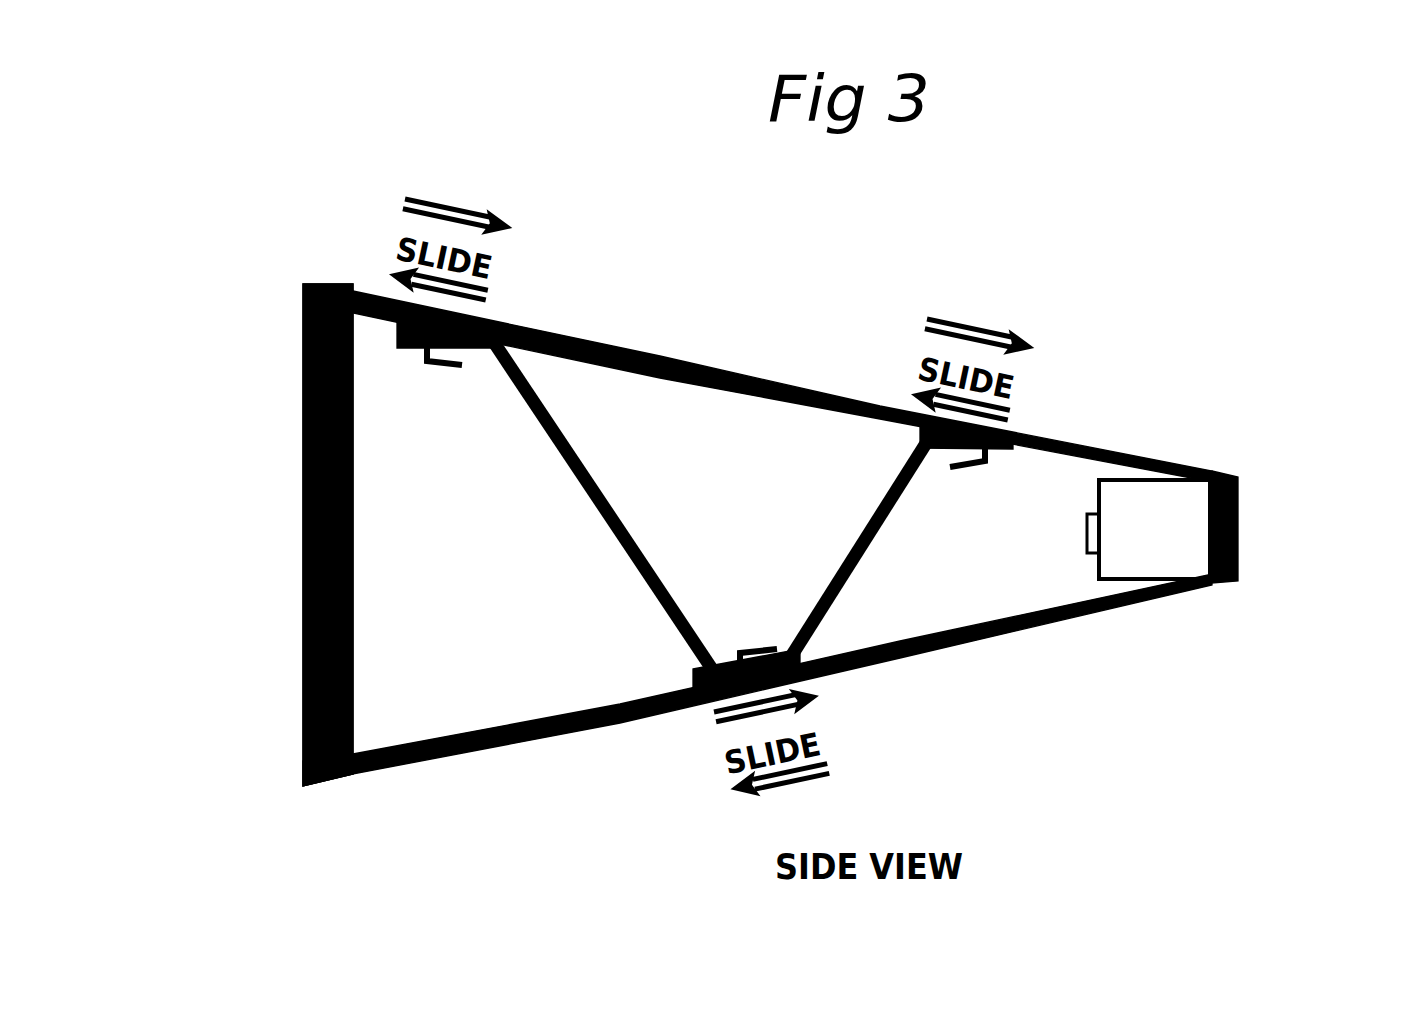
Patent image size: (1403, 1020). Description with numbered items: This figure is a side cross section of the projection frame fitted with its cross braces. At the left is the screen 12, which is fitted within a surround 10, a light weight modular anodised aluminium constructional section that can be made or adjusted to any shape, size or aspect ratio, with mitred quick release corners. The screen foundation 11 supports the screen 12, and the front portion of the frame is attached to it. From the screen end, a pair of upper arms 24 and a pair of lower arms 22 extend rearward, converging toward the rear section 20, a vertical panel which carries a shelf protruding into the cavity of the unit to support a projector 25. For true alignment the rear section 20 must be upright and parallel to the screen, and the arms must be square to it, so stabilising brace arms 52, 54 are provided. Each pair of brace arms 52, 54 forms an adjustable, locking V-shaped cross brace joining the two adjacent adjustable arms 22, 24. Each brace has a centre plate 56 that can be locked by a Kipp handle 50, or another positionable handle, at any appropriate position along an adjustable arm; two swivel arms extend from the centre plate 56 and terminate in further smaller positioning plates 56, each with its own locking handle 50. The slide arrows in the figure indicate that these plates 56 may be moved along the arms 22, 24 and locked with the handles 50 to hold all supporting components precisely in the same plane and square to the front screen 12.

The surround 10 is at (303, 697).
The screen foundation 11 is at (345, 778).
The screen 12 is at (292, 556).
The rear section 20 is at (1250, 517).
The lower arms 22 is at (435, 752).
The upper arms 24 is at (715, 366).
The projector 25 is at (1096, 500).
The Kipp handle 50 is at (715, 660).
The stabilising brace arm 52 is at (885, 535).
The stabilising brace arm 54 is at (640, 592).
The centre plate 56 is at (1017, 433).